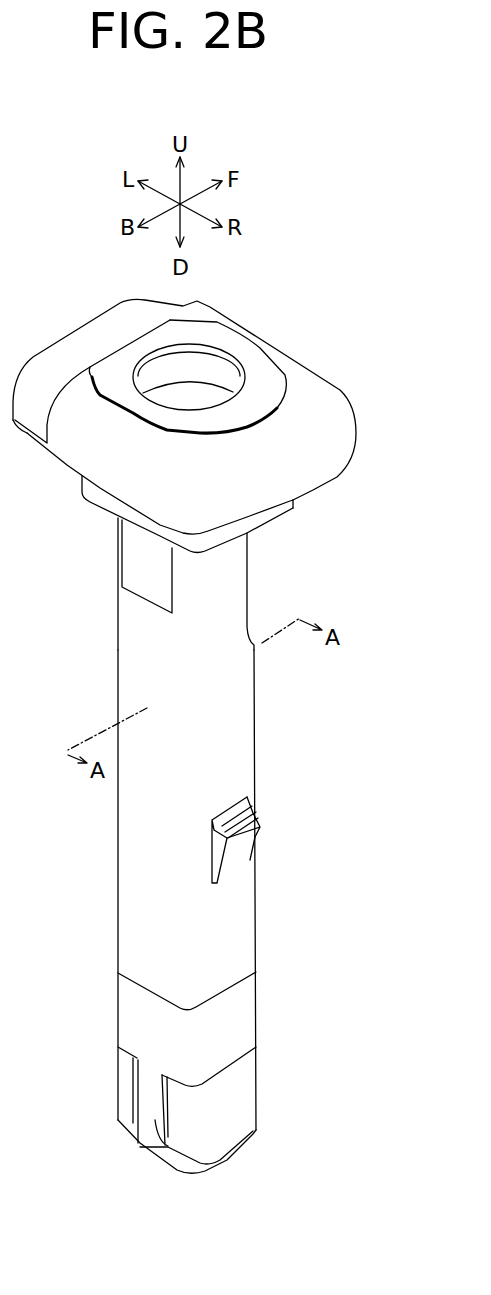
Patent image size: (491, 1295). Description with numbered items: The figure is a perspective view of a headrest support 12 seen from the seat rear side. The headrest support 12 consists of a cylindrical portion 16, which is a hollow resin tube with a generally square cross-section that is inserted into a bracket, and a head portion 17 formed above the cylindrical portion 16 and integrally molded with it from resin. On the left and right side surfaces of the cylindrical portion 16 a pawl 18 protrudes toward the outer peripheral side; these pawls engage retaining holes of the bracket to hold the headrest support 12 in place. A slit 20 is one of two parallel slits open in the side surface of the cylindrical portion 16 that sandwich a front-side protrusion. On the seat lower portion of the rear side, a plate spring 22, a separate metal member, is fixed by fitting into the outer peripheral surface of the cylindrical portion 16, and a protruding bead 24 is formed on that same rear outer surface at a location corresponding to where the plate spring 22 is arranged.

The headrest support 12 is at (304, 339).
The cylindrical portion 16 is at (257, 745).
The head portion 17 is at (80, 447).
The pawl 18 is at (245, 837).
The slit 20 is at (247, 593).
The plate spring 22 is at (143, 1117).
The protruding bead 24 is at (142, 567).